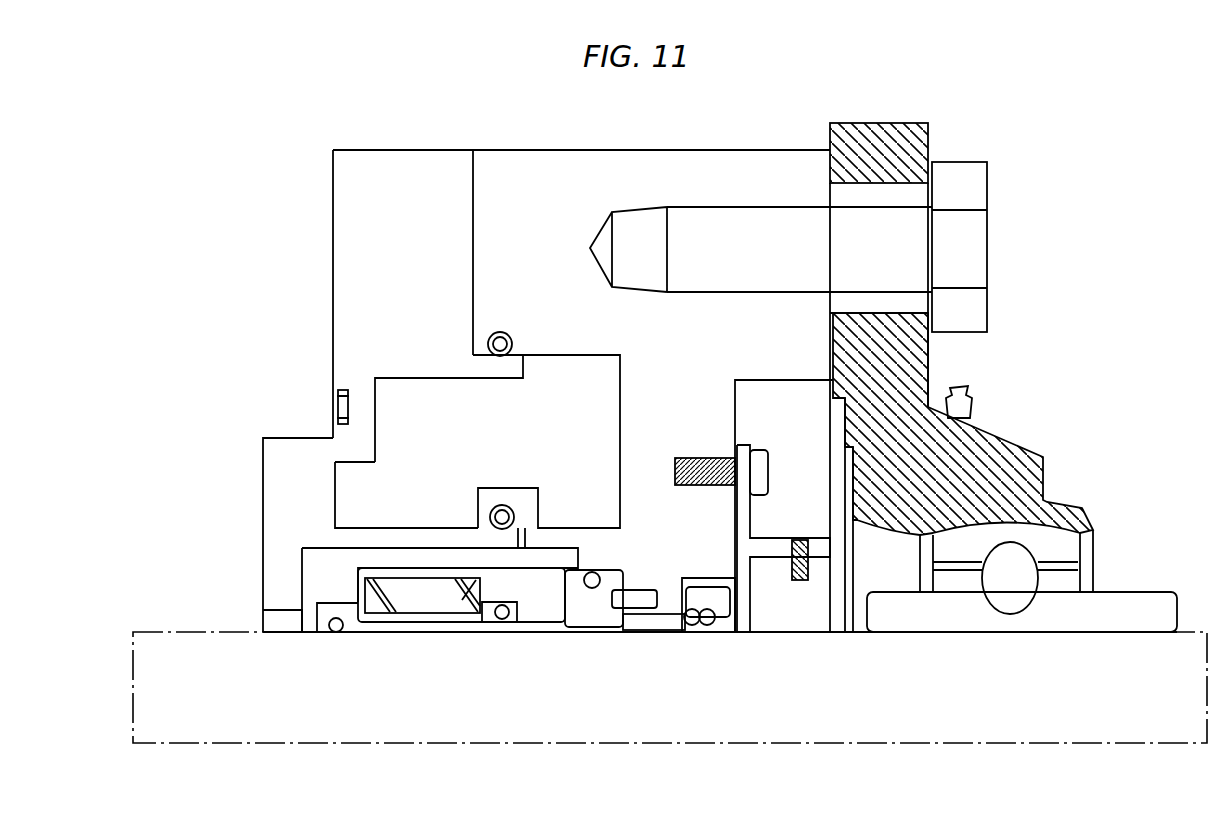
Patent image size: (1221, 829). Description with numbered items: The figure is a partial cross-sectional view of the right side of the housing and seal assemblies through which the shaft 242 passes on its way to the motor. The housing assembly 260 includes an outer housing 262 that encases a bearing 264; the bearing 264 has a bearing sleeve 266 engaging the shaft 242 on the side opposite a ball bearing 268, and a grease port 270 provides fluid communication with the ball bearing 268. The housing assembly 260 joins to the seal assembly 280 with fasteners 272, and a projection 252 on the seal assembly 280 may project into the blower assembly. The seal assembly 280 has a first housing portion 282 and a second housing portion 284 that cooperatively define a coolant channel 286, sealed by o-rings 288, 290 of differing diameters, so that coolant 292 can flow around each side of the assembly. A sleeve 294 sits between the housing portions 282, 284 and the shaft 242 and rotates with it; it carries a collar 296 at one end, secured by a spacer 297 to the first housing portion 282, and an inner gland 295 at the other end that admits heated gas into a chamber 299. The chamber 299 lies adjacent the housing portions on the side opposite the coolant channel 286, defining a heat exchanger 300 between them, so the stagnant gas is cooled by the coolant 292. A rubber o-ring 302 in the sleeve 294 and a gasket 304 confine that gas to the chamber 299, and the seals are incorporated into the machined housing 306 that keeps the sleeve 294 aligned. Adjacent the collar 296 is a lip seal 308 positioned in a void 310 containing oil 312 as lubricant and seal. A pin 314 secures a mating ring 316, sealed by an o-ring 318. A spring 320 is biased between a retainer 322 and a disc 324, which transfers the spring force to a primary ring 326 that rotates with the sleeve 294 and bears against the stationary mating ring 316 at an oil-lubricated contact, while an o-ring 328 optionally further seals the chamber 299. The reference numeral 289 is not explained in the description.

The shaft 242 is at (1110, 700).
The projection 252 is at (262, 437).
The housing assembly 260 is at (893, 124).
The outer housing 262 is at (1010, 437).
The bearing 264 is at (1097, 542).
The bearing sleeve 266 is at (1110, 592).
The ball bearing 268 is at (1017, 577).
The grease port 270 is at (963, 392).
The fasteners 272 is at (960, 240).
The seal assembly 280 is at (583, 150).
The first housing portion 282 is at (546, 243).
The second housing portion 284 is at (402, 233).
The coolant channel 286 is at (480, 408).
The o-ring 288 is at (478, 338).
The knob 289 is at (758, 460).
The o-ring 290 is at (482, 520).
The coolant 292 is at (580, 387).
The sleeve 294 is at (425, 623).
The inner gland 295 is at (278, 623).
The collar 296 is at (773, 615).
The spacer 297 is at (752, 528).
The chamber 299 is at (312, 580).
The heat exchanger 300 is at (402, 540).
The rubber o-ring 302 is at (335, 632).
The gasket 304 is at (332, 407).
The machined housing 306 is at (623, 553).
The lip seal 308 is at (720, 623).
The void 310 is at (698, 607).
The oil 312 is at (642, 629).
The pin 314 is at (637, 600).
The mating ring 316 is at (592, 606).
The o-ring 318 is at (589, 584).
The spring 320 is at (395, 603).
The retainer 322 is at (403, 574).
The disc 324 is at (462, 614).
The primary ring 326 is at (560, 601).
The o-ring 328 is at (505, 623).